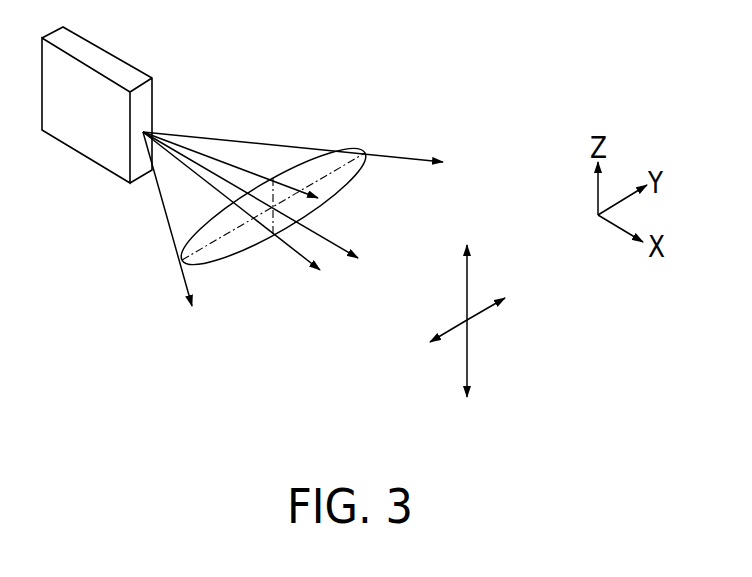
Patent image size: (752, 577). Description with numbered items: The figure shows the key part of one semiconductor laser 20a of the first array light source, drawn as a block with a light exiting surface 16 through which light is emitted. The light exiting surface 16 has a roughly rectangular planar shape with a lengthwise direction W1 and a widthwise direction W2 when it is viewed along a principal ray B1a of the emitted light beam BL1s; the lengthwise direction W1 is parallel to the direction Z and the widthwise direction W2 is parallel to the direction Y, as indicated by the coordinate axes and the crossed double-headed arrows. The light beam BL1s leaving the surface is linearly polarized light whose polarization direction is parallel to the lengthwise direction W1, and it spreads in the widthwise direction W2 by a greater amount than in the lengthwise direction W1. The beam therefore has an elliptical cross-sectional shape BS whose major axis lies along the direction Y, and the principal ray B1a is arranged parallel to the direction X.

The light exiting surface 16 is at (128, 122).
The semiconductor laser 20a is at (68, 115).
The light beam BL1s is at (238, 165).
The principal ray B1a is at (333, 237).
The elliptical cross-sectional shape BS is at (215, 267).
The lengthwise direction W1 is at (466, 303).
The widthwise direction W2 is at (451, 329).